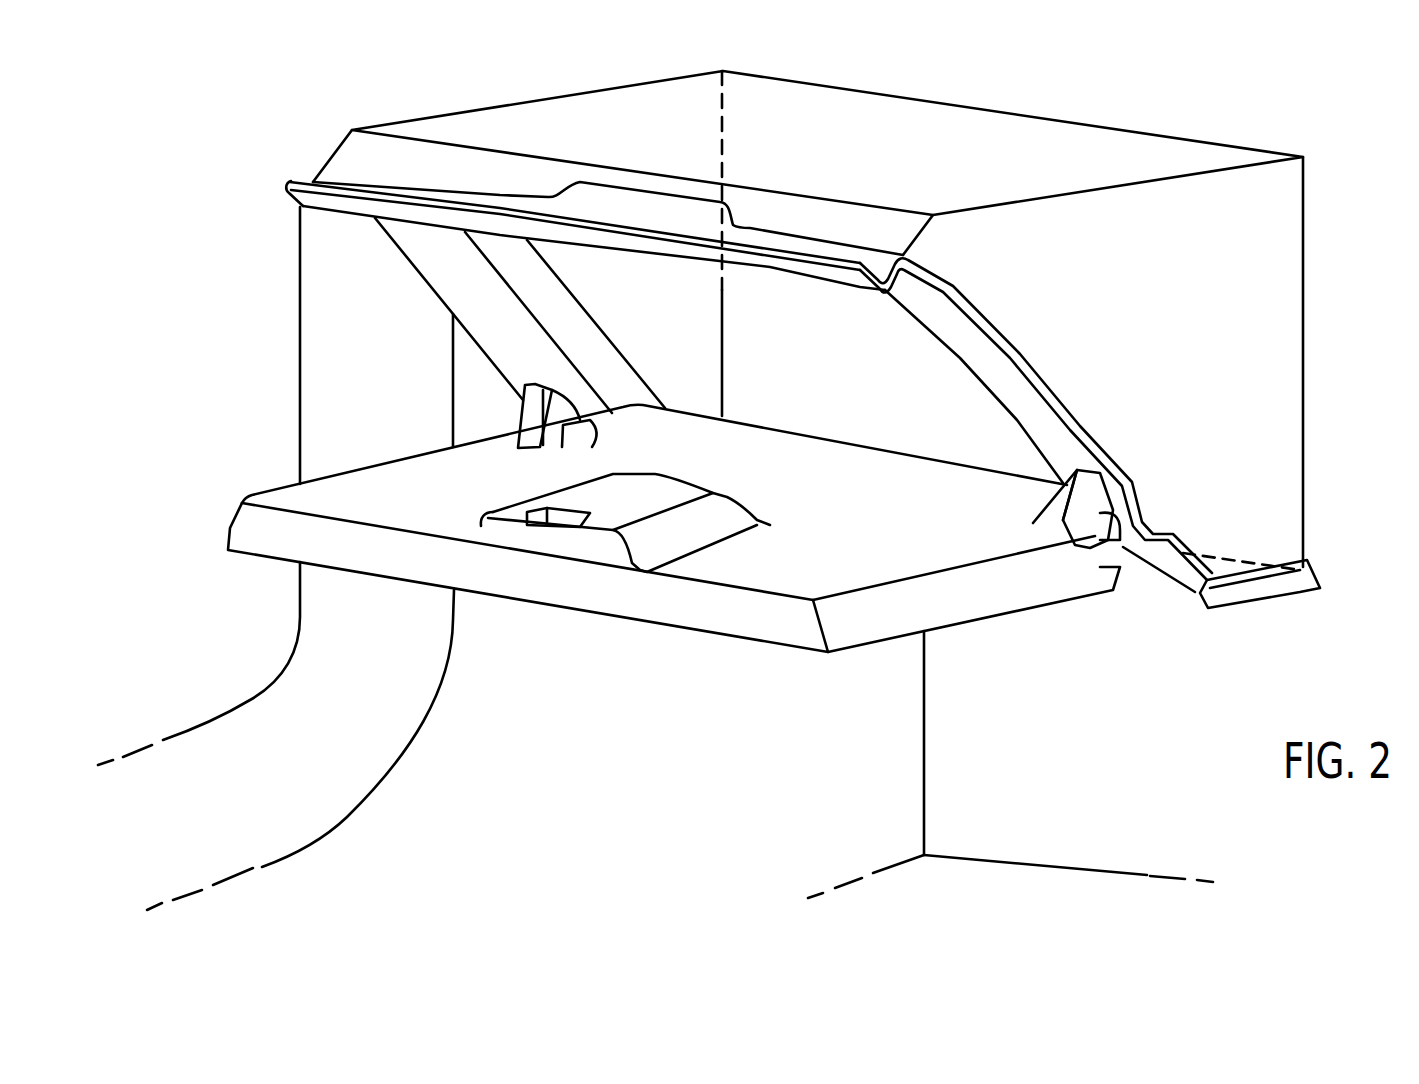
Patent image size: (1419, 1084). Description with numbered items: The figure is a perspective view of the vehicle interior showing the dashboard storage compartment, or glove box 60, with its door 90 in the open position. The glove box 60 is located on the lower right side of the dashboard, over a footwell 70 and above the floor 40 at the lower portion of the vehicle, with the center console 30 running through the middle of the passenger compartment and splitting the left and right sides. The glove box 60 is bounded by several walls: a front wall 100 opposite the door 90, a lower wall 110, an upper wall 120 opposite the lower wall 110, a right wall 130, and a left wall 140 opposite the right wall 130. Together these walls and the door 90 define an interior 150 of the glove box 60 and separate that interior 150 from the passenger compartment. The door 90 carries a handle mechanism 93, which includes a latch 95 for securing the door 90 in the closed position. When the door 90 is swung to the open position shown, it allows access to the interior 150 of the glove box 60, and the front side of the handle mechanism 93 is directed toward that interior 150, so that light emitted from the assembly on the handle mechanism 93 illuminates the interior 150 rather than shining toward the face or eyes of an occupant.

The center console 30 is at (328, 360).
The floor 40 is at (995, 880).
The dashboard storage compartment 60 is at (1352, 253).
The footwell 70 is at (917, 864).
The door 90 is at (628, 598).
The handle mechanism 93 is at (697, 527).
The latch 95 is at (560, 517).
The front wall 100 is at (930, 398).
The lower wall 110 is at (1217, 570).
The upper wall 120 is at (1107, 140).
The right wall 130 is at (1273, 377).
The left wall 140 is at (678, 297).
The interior 150 is at (660, 352).